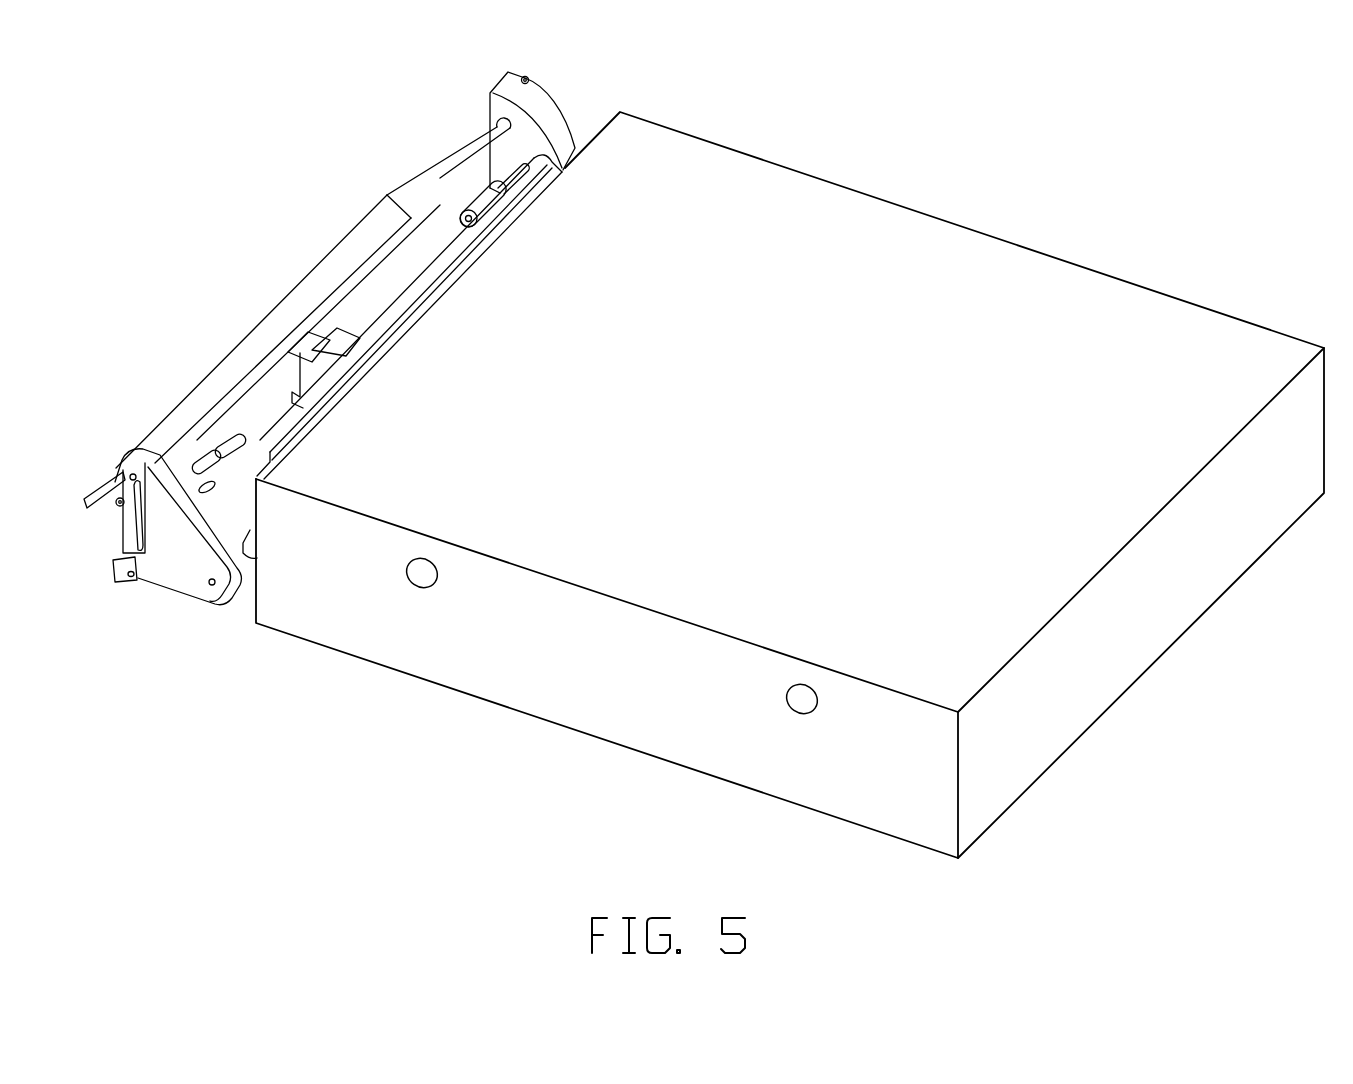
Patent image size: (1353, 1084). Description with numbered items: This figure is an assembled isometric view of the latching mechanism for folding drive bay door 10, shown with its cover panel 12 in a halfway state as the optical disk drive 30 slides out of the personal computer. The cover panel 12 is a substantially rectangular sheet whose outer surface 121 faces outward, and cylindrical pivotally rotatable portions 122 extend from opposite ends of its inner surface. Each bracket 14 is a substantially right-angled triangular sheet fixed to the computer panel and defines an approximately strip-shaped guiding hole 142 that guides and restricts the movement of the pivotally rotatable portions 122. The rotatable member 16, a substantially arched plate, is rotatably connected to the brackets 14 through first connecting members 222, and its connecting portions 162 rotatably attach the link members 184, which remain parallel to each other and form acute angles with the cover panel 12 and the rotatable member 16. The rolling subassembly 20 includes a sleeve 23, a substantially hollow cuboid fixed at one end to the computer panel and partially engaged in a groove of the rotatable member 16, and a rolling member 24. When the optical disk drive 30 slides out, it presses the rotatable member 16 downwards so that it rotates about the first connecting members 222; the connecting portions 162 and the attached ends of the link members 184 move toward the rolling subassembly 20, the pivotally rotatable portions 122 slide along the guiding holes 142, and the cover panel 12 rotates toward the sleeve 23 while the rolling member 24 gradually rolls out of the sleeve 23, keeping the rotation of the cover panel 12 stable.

The latching mechanism for folding drive bay door 10 is at (156, 578).
The cover panel 12 is at (278, 299).
The outer surface 121 is at (397, 207).
The pivotally rotatable portion 122 is at (122, 498).
The bracket 14 is at (527, 93).
The guiding hole 142 is at (132, 538).
The rotatable member 16 is at (540, 155).
The connecting portion 162 is at (500, 175).
The link member 184 is at (464, 193).
The rolling subassembly 20 is at (270, 315).
The first connecting member 222 is at (212, 585).
The sleeve 23 is at (352, 337).
The rolling member 24 is at (258, 355).
The optical disk drive 30 is at (562, 160).